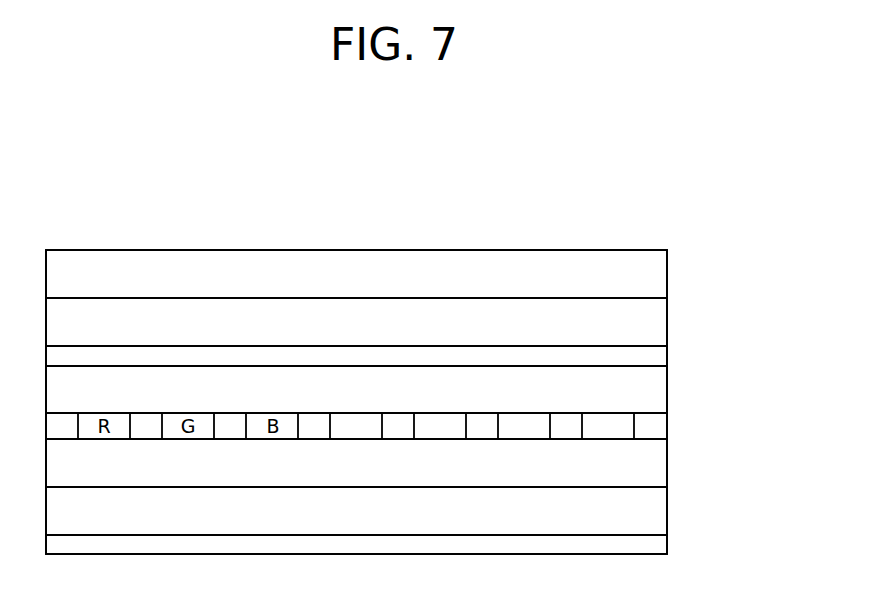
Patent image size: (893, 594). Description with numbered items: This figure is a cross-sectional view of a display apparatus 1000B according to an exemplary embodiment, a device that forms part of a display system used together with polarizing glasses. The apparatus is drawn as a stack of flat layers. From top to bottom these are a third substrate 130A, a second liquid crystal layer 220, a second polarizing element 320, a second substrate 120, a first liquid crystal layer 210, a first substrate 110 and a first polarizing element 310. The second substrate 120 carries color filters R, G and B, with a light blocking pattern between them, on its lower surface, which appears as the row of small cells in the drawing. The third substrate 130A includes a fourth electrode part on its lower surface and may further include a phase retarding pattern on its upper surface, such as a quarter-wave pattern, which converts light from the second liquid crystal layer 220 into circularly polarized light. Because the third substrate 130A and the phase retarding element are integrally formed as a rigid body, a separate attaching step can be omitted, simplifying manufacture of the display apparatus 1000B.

The display apparatus 1000B is at (289, 188).
The third substrate 130A is at (667, 265).
The second liquid crystal layer 220 is at (667, 319).
The second polarizing element 320 is at (667, 354).
The second substrate 120 is at (667, 391).
The first liquid crystal layer 210 is at (667, 460).
The first substrate 110 is at (667, 506).
The first polarizing element 310 is at (667, 541).